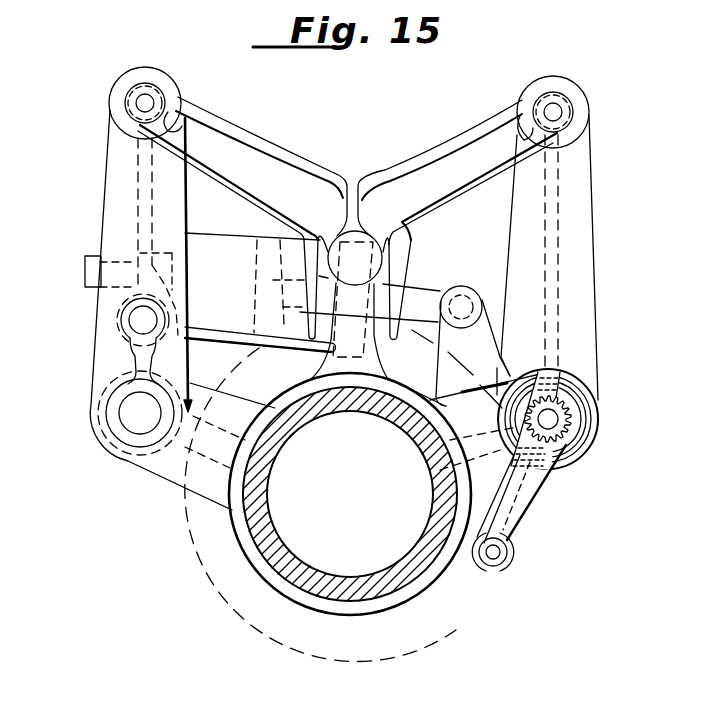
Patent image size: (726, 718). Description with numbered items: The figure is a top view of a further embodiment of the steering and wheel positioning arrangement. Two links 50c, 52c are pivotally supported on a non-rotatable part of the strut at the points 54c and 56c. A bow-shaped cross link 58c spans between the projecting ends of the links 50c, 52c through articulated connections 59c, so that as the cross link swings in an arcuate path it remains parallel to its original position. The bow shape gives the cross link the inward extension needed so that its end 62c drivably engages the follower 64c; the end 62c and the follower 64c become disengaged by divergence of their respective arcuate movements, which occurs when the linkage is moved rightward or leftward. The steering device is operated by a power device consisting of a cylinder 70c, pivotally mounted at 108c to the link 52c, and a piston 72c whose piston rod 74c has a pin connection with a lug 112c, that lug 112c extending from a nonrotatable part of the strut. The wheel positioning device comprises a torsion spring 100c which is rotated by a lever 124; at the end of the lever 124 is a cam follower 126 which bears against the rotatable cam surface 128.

The articulated connections 59c is at (145, 88).
The link 52c is at (117, 157).
The link 50c is at (578, 241).
The cross link 58c is at (412, 165).
The follower 64c is at (337, 174).
The piston 72c is at (277, 236).
The end 62c is at (400, 270).
The cylinder 70c is at (203, 250).
The piston rod 74c is at (437, 290).
The lug 112c is at (500, 357).
The pivotal mounting 108c is at (132, 320).
The pivotal support 56c is at (110, 447).
The pivotal support 54c is at (608, 432).
The torsion spring 100c is at (590, 447).
The lever 124 is at (541, 505).
The cam follower 126 is at (510, 578).
The cam surface 128 is at (446, 640).